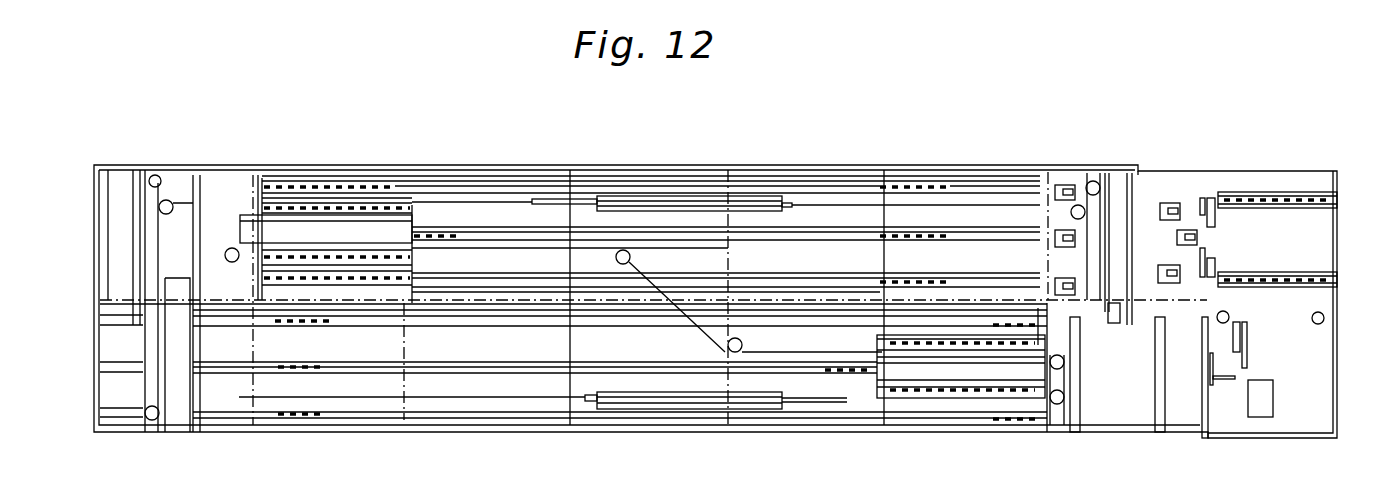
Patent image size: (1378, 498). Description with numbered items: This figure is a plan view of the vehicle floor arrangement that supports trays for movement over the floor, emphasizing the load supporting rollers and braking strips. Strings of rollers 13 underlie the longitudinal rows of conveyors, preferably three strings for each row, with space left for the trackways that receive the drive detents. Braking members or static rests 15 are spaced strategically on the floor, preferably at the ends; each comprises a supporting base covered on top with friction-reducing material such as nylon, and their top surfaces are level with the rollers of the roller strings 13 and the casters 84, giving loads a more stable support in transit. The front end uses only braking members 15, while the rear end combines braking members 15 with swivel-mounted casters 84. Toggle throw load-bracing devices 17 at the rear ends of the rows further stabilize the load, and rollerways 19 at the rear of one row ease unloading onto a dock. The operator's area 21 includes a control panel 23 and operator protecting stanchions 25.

The strings of rollers 13 is at (908, 185).
The braking members 15 is at (140, 242).
The load-bracing devices 17 is at (1200, 203).
The rollerways 19 is at (1260, 204).
The operator's area 21 is at (1322, 356).
The control panel 23 is at (1273, 408).
The operator protecting stanchions 25 is at (1229, 314).
The casters 84 is at (1067, 184).